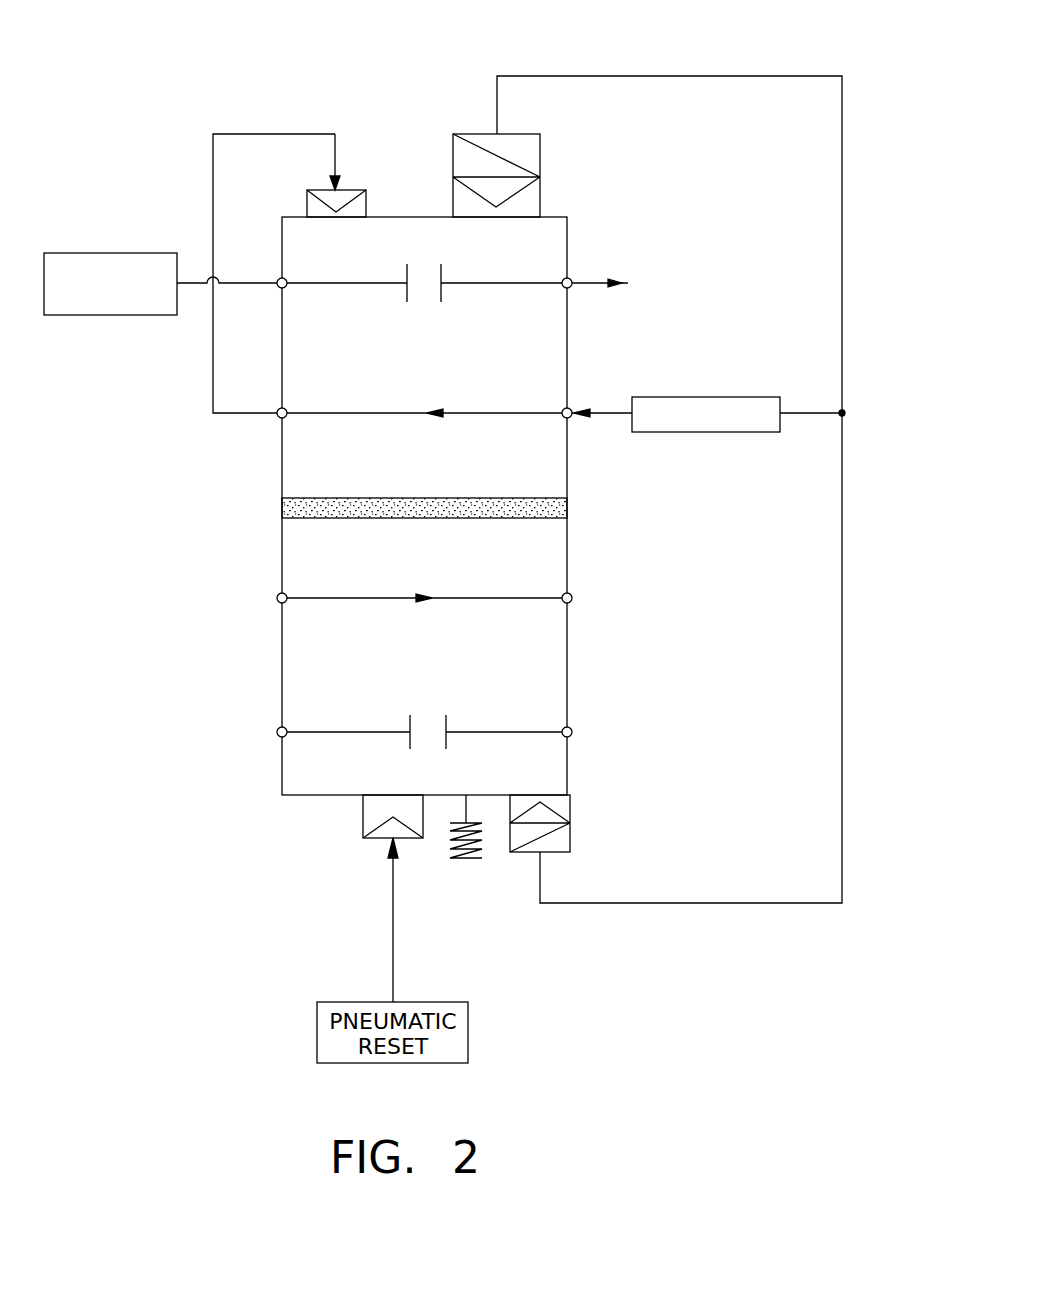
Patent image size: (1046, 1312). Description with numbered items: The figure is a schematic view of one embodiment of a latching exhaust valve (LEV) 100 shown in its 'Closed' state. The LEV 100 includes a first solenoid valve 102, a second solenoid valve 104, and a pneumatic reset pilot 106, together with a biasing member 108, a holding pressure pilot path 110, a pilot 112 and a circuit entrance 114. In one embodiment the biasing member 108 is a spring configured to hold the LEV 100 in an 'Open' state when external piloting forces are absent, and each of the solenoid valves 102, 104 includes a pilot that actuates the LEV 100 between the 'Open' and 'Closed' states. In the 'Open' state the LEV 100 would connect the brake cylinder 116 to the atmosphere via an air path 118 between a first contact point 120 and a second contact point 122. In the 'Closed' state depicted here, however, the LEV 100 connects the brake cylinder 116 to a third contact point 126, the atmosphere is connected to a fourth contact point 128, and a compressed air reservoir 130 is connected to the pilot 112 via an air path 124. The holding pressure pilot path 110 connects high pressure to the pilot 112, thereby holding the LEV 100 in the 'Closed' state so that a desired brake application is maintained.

The latching exhaust valve 100 is at (357, 75).
The first solenoid valve 102 is at (535, 124).
The second solenoid valve 104 is at (555, 855).
The pneumatic reset pilot 106 is at (362, 816).
The biasing member 108 is at (468, 868).
The holding pressure pilot path 110 is at (213, 358).
The pilot 112 is at (318, 187).
The circuit entrance 114 is at (282, 736).
The brake cylinder 116 is at (130, 252).
The air path 118 is at (468, 601).
The first contact point 120 is at (286, 595).
The second contact point 122 is at (564, 595).
The air path 124 is at (510, 411).
The third contact point 126 is at (285, 279).
The fourth contact point 128 is at (563, 279).
The compressed air reservoir 130 is at (703, 396).